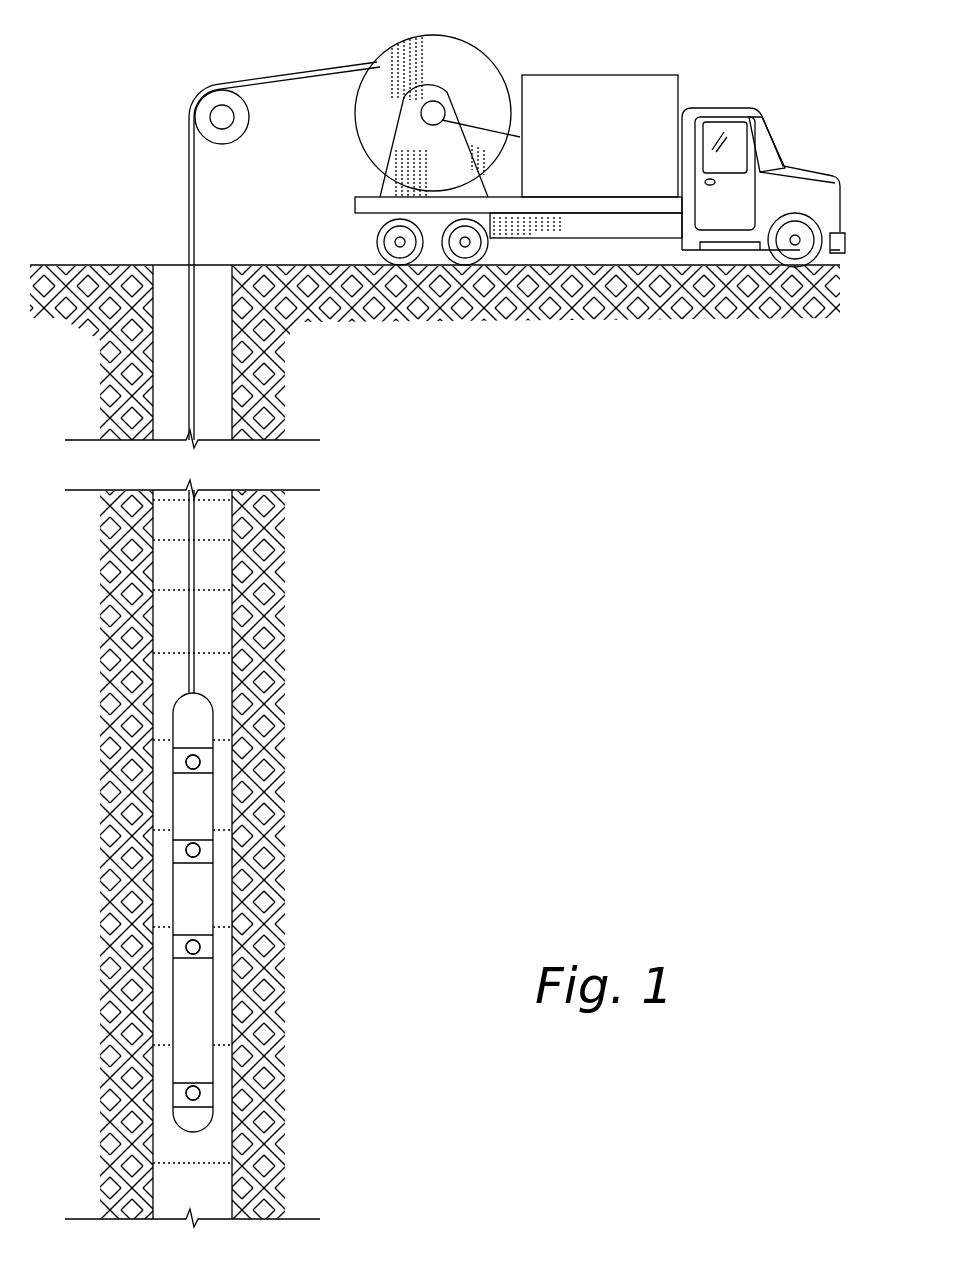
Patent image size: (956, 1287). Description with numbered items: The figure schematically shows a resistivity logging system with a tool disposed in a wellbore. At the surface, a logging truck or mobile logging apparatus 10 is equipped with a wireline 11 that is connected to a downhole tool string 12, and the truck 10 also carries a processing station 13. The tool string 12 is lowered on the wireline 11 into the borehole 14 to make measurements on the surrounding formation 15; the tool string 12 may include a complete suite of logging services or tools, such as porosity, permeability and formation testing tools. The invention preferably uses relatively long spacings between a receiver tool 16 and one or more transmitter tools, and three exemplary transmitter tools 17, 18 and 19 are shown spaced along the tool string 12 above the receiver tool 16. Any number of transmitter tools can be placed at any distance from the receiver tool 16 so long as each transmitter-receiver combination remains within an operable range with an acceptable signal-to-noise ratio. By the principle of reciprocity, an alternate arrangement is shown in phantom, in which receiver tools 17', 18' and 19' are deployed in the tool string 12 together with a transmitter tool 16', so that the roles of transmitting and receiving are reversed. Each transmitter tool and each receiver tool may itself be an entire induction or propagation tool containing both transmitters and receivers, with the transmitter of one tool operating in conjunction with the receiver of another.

The logging truck 10 is at (600, 146).
The wireline 11 is at (275, 73).
The downhole tool string 12 is at (198, 912).
The processing station 13 is at (600, 75).
The borehole 14 is at (173, 263).
The formation 15 is at (100, 1001).
The receiver tool 16 is at (120, 1083).
The transmitter tool 16' is at (271, 1083).
The transmitter tool 17 is at (120, 935).
The receiver tool 17' is at (271, 935).
The transmitter tool 18 is at (120, 839).
The receiver tool 18' is at (271, 839).
The transmitter tool 19 is at (120, 750).
The receiver tool 19' is at (271, 750).